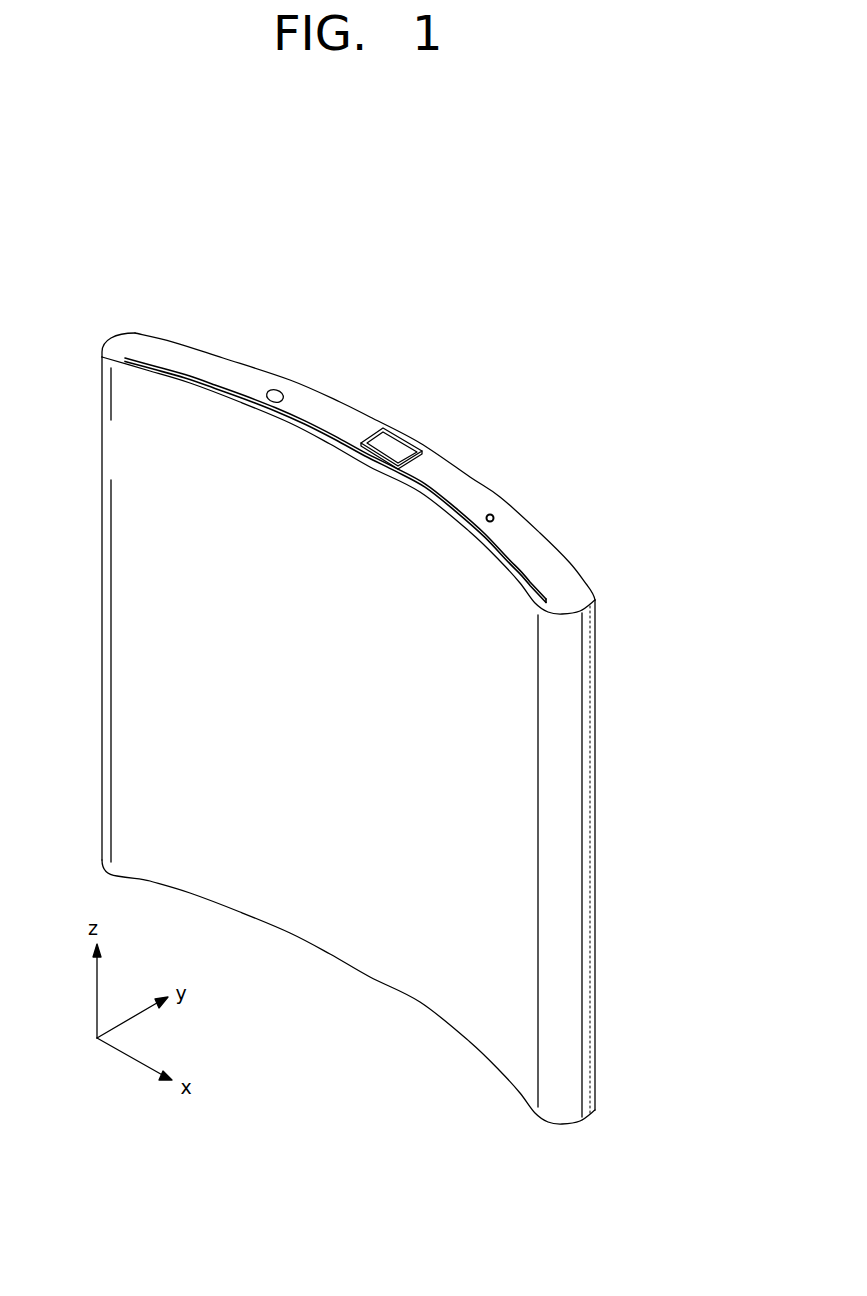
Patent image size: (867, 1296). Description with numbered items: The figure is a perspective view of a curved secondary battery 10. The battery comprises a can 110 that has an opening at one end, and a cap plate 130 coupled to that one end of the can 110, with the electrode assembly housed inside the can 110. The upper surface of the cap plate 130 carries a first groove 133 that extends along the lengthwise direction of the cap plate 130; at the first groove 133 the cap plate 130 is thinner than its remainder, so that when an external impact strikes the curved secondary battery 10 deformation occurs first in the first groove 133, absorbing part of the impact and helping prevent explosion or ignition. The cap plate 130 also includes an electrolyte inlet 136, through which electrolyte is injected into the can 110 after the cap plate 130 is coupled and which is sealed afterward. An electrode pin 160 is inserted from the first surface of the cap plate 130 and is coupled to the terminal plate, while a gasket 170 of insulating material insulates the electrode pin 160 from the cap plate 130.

The curved secondary battery 10 is at (562, 292).
The can 110 is at (578, 722).
The cap plate 130 is at (570, 572).
The first groove 133 is at (508, 553).
The electrolyte inlet 136 is at (277, 389).
The electrode pin 160 is at (388, 440).
The gasket 170 is at (422, 451).